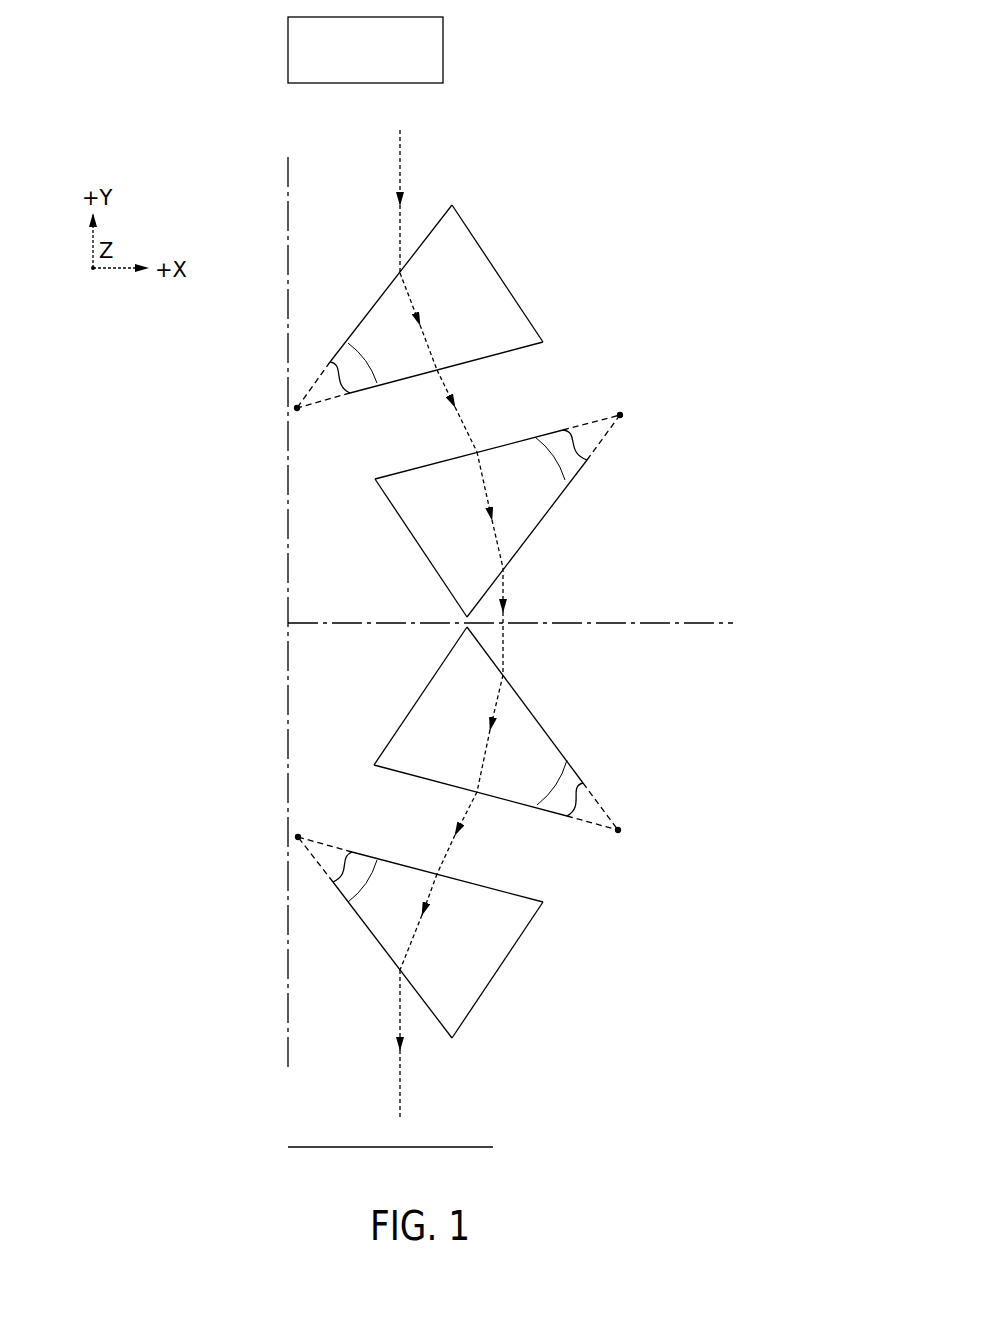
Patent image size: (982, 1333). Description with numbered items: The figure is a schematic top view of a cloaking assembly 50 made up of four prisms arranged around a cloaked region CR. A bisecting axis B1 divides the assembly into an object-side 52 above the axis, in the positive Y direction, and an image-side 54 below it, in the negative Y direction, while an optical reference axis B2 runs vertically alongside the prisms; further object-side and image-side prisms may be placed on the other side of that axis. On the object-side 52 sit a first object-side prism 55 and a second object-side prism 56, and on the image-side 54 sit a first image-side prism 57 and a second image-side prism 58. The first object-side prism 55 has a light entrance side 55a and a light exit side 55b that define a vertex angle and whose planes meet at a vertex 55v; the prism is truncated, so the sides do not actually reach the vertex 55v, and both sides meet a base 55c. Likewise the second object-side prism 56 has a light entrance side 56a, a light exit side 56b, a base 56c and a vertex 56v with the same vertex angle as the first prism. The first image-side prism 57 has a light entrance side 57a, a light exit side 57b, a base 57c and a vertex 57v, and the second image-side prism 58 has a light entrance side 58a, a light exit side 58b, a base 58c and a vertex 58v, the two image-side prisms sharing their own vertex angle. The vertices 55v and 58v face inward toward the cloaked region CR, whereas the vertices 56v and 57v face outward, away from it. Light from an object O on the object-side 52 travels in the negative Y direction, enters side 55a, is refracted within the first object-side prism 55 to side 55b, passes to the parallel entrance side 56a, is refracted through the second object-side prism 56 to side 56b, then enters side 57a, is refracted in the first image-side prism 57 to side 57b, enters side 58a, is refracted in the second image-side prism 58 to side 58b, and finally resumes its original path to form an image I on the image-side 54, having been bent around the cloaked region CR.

The cloaking assembly 50 is at (768, 132).
The object-side 52 is at (693, 250).
The image-side 54 is at (693, 995).
The first object-side prism 55 is at (558, 270).
The light entrance side 55a is at (375, 305).
The light exit side 55b is at (510, 353).
The base 55c is at (483, 250).
The vertex 55v is at (297, 408).
The second object-side prism 56 is at (653, 393).
The light entrance side 56a is at (427, 462).
The light exit side 56b is at (553, 507).
The base 56c is at (413, 543).
The vertex 56v is at (620, 415).
The first image-side prism 57 is at (655, 853).
The light entrance side 57a is at (553, 740).
The light exit side 57b is at (427, 780).
The base 57c is at (413, 702).
The vertex 57v is at (618, 830).
The second image-side prism 58 is at (558, 975).
The light entrance side 58a is at (507, 890).
The light exit side 58b is at (373, 935).
The base 58c is at (483, 990).
The vertex 58v is at (298, 837).
The object O is at (375, 63).
The image I is at (345, 1147).
The cloaked region CR is at (333, 612).
The bisecting axis B1 is at (703, 622).
The optical reference axis B2 is at (288, 163).